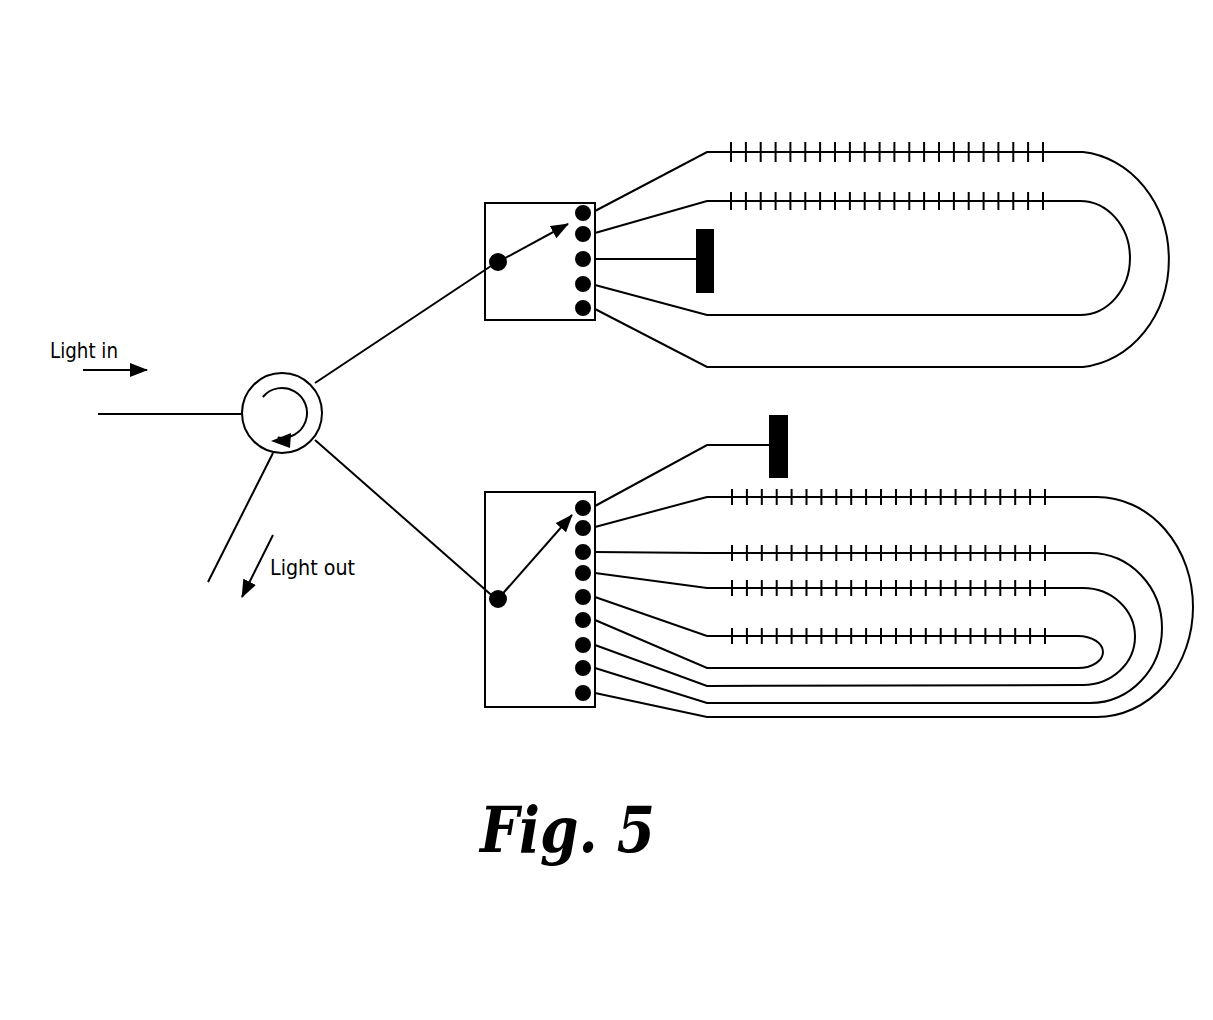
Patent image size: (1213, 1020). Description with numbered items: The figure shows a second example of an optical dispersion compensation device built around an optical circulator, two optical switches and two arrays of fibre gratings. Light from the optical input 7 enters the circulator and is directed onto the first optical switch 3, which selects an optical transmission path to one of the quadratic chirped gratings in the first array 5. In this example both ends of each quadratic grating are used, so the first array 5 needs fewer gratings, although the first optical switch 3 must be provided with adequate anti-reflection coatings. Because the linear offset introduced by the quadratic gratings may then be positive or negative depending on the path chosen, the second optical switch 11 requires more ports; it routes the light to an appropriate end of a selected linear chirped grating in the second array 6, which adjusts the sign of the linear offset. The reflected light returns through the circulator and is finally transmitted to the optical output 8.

The first optical switch 3 is at (550, 320).
The first array of fibre gratings 5 is at (918, 97).
The second array of fibre gratings 6 is at (918, 467).
The optical input 7 is at (173, 414).
The optical output 8 is at (240, 520).
The second optical switch 11 is at (558, 492).